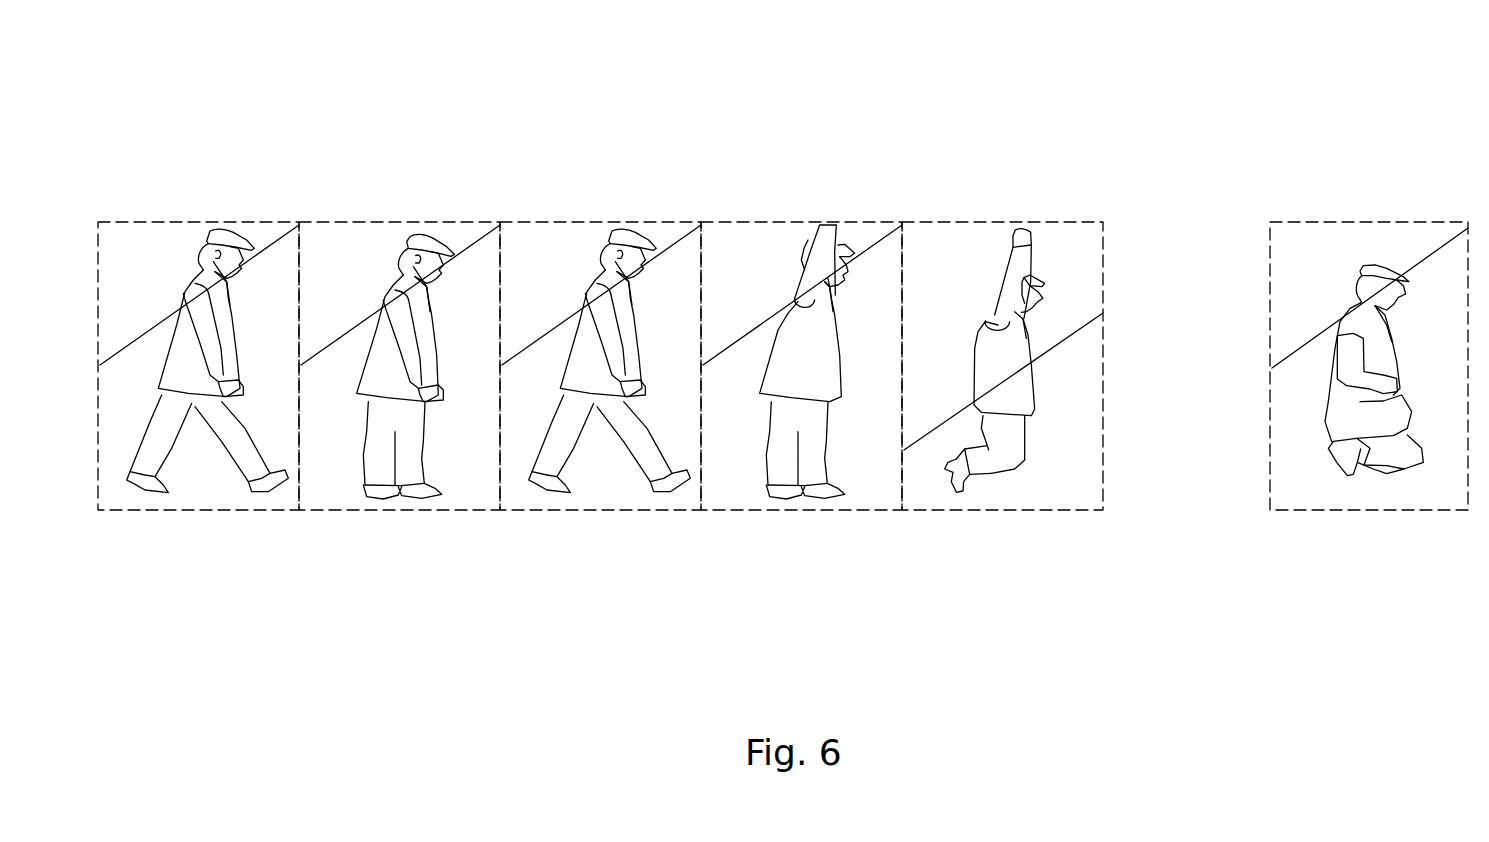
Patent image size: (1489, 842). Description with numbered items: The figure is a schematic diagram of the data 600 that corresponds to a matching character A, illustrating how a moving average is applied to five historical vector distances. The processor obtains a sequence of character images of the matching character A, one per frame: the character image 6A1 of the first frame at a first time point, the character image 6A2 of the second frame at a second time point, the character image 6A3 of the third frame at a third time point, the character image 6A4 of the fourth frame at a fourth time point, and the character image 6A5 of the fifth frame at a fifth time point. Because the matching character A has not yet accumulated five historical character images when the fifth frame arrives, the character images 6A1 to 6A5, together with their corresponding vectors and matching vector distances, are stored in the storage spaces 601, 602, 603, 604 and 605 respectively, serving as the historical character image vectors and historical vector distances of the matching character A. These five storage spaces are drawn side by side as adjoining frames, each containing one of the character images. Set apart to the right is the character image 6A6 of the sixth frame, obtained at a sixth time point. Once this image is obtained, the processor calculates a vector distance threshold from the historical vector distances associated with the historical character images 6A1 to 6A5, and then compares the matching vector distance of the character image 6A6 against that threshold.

The data 600 is at (170, 53).
The storage space 601 is at (150, 222).
The storage space 602 is at (347, 222).
The storage space 603 is at (553, 222).
The storage space 604 is at (747, 222).
The storage space 605 is at (952, 222).
The character image 6A1 is at (224, 232).
The character image 6A2 is at (422, 236).
The character image 6A3 is at (629, 232).
The character image 6A4 is at (822, 222).
The character image 6A5 is at (1025, 232).
The character image 6A6 is at (1385, 268).